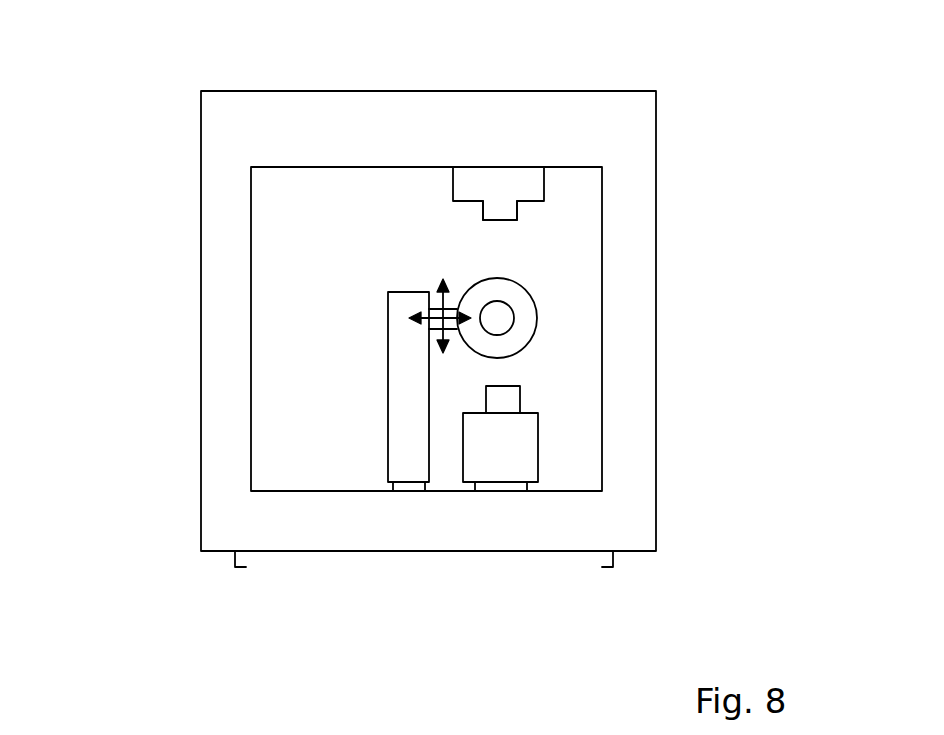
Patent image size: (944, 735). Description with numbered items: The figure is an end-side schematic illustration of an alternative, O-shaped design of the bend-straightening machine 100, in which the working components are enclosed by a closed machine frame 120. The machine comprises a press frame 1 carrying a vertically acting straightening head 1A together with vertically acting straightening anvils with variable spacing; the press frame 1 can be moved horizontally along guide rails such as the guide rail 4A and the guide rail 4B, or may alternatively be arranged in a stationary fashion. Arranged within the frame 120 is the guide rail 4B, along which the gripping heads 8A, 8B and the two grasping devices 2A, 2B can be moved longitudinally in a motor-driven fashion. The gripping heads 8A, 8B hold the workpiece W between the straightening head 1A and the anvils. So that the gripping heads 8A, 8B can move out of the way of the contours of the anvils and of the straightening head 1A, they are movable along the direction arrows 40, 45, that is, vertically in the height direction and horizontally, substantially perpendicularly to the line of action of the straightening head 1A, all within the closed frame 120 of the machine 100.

The bend-straightening machine 100 is at (673, 137).
The closed machine frame 120 is at (560, 102).
The press frame 1 is at (527, 188).
The straightening head 1A is at (507, 213).
The grasping device 2A is at (236, 370).
The grasping device 2B is at (397, 303).
The gripping head 8A is at (629, 306).
The gripping head 8B is at (532, 297).
The workpiece W is at (508, 327).
The direction arrow 40 is at (412, 318).
The direction arrow 45 is at (443, 279).
The guide rail 4A is at (613, 567).
The guide rail 4B is at (412, 490).